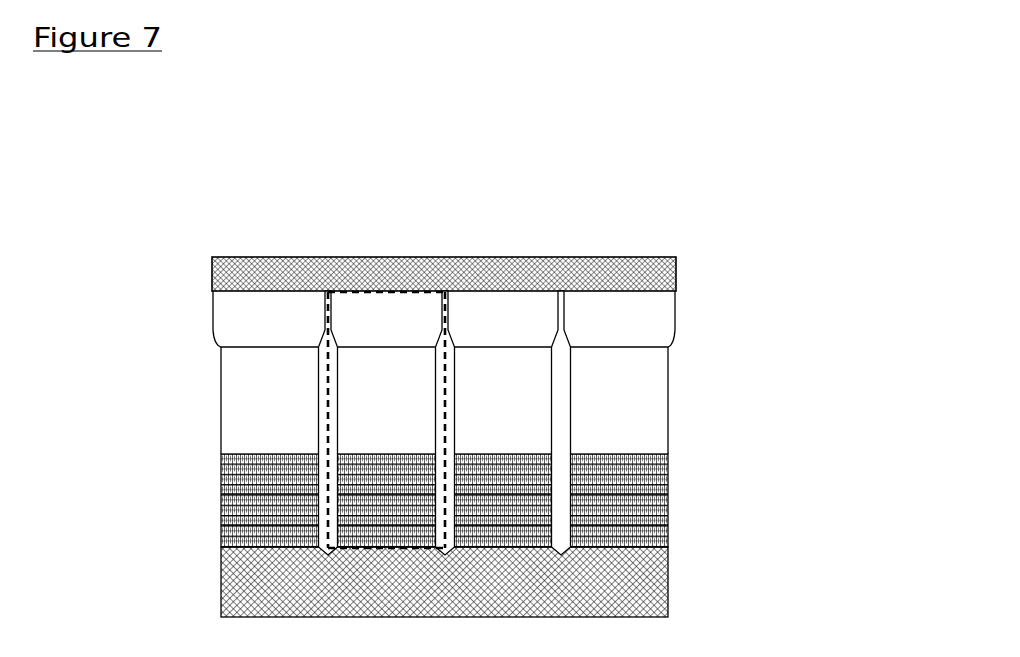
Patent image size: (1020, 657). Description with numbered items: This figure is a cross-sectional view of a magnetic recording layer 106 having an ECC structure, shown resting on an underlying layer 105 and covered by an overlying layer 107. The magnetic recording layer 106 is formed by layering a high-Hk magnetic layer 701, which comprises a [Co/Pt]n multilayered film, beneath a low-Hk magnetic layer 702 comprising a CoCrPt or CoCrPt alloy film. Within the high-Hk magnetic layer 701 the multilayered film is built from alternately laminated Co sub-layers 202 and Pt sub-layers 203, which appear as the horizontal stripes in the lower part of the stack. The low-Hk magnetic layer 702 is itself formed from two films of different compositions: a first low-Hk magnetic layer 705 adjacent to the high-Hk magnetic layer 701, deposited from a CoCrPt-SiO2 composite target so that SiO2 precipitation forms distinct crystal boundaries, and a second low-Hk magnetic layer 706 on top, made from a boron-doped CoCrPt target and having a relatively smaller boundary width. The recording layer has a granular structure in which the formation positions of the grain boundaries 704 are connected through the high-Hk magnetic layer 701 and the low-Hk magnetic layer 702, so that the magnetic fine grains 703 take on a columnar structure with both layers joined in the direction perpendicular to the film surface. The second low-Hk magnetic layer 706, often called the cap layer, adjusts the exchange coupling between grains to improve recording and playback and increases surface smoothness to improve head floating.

The top electrode layer 107 is at (658, 275).
The magnetic recording layer 106 is at (509, 422).
The low-Hk magnetic layer 702 is at (437, 372).
The high-Hk magnetic layer 701 is at (437, 503).
The second low-Hk magnetic layer 706 is at (257, 318).
The first low-Hk magnetic layer 705 is at (257, 402).
The Co sub-layer 202 is at (222, 505).
The Pt sub-layer 203 is at (222, 520).
The magnetic fine grain 703 is at (410, 290).
The grain boundary 704 is at (560, 367).
The substrate 105 is at (670, 581).